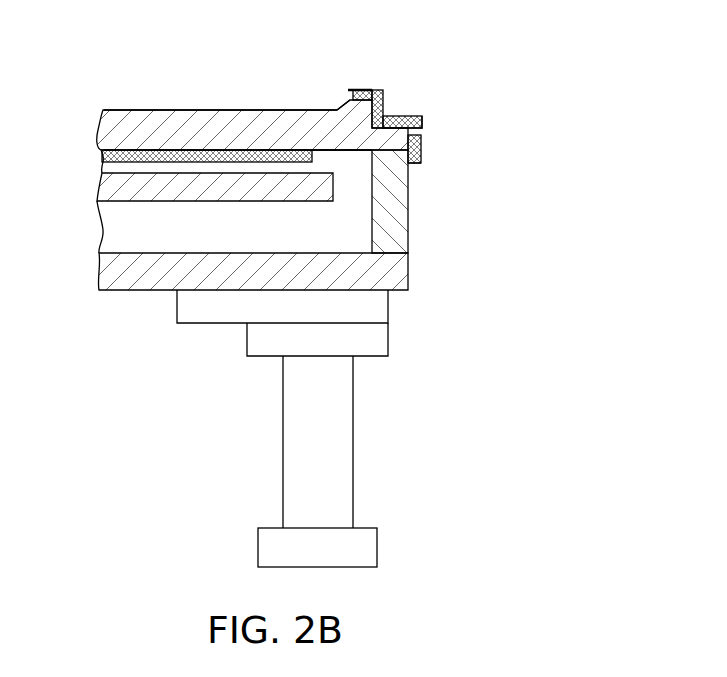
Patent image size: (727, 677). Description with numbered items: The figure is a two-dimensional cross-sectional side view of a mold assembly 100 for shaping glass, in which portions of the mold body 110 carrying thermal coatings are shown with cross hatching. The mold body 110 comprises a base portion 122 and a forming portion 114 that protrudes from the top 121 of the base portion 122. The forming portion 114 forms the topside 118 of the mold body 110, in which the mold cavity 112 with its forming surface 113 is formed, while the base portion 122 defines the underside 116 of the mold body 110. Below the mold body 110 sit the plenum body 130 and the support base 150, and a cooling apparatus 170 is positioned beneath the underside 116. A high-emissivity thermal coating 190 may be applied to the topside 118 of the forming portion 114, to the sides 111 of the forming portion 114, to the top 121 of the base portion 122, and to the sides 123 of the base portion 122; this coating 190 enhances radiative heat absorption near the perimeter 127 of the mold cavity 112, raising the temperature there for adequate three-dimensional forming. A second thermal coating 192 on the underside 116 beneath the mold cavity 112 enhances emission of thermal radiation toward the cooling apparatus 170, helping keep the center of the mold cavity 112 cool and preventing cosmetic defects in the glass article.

The mold assembly 100 is at (498, 112).
The mold body 110 is at (98, 145).
The mold cavity 112 is at (153, 111).
The forming surface 113 is at (228, 111).
The forming portion 114 is at (372, 91).
The underside 116 is at (357, 151).
The topside 118 is at (355, 91).
The sides of the forming portion 111 is at (380, 100).
The top of the base portion 121 is at (412, 117).
The base portion 122 is at (421, 160).
The sides of the base portion 123 is at (422, 121).
The perimeter of the mold cavity 127 is at (352, 100).
The plenum body 130 is at (408, 197).
The support base 150 is at (408, 272).
The cooling apparatus 170 is at (240, 201).
The thermal coating 190 is at (422, 143).
The thermal coating 192 is at (118, 165).